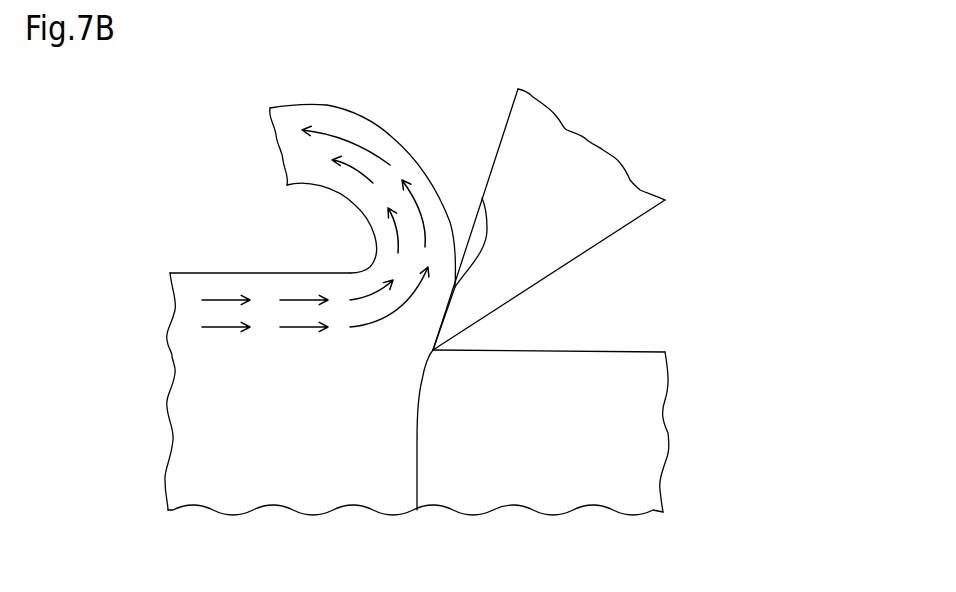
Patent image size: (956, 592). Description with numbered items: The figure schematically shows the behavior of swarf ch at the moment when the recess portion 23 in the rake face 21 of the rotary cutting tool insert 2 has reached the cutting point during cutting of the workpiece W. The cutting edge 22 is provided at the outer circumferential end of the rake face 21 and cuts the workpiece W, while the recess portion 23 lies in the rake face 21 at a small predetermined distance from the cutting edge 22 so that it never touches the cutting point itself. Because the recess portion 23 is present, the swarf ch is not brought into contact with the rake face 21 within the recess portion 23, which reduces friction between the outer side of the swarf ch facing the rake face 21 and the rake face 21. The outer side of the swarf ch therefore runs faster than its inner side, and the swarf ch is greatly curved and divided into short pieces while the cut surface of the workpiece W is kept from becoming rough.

The rotary cutting tool insert 2 is at (603, 222).
The rake face 21 is at (503, 133).
The cutting edge 22 is at (417, 510).
The recess portion 23 is at (477, 227).
The workpiece W is at (640, 433).
The swarf ch is at (295, 117).